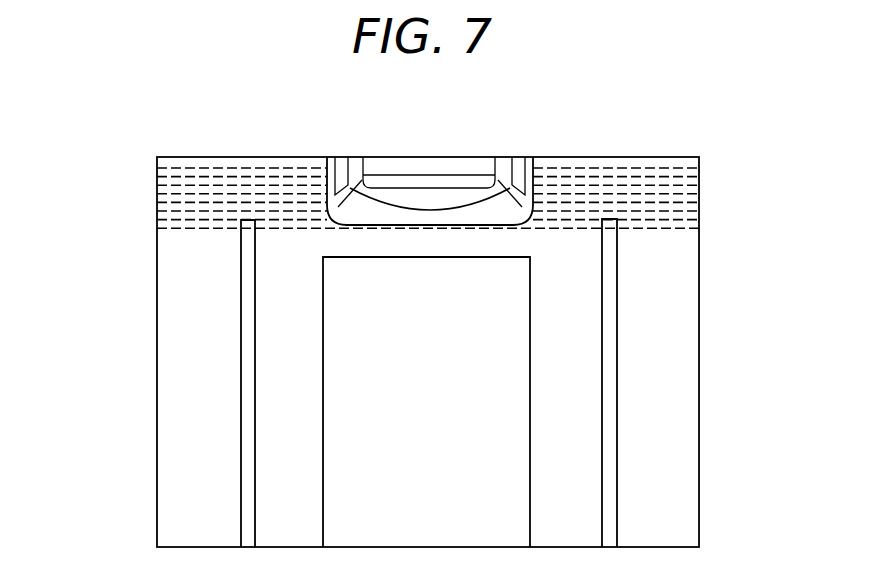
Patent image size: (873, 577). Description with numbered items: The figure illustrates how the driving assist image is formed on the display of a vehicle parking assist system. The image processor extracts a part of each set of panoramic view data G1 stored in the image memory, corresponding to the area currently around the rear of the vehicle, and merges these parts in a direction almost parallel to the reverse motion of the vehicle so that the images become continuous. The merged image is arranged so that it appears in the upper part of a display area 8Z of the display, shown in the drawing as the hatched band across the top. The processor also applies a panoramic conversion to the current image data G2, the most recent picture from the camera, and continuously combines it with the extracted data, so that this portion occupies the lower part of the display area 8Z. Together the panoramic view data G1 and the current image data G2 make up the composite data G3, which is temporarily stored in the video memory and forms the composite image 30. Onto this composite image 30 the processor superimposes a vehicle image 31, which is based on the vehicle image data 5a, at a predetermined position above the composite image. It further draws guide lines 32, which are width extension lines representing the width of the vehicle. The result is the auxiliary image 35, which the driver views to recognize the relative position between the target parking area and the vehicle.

The auxiliary image 35 is at (190, 157).
The vehicle image 31 is at (400, 157).
The vehicle image data 5a is at (430, 191).
The guide lines 32 is at (323, 362).
The display area 8Z is at (699, 317).
The panoramic view data G1 is at (157, 168).
The current image data G2 is at (151, 547).
The composite data G3 is at (36, 277).
The composite image 30 is at (63, 258).